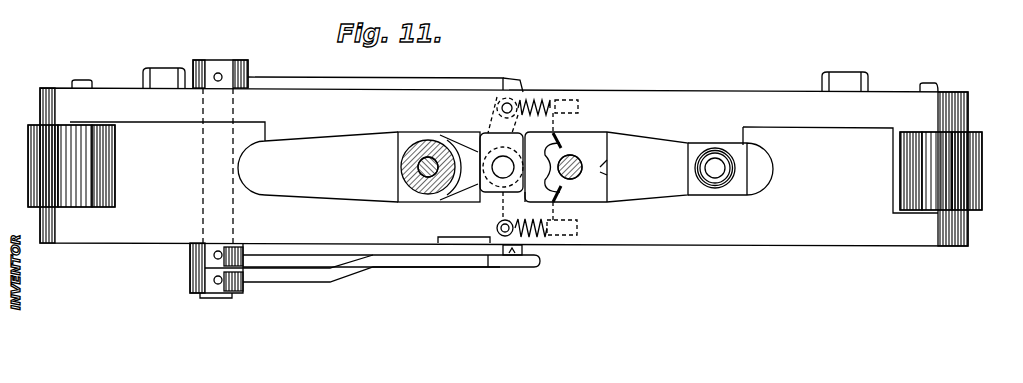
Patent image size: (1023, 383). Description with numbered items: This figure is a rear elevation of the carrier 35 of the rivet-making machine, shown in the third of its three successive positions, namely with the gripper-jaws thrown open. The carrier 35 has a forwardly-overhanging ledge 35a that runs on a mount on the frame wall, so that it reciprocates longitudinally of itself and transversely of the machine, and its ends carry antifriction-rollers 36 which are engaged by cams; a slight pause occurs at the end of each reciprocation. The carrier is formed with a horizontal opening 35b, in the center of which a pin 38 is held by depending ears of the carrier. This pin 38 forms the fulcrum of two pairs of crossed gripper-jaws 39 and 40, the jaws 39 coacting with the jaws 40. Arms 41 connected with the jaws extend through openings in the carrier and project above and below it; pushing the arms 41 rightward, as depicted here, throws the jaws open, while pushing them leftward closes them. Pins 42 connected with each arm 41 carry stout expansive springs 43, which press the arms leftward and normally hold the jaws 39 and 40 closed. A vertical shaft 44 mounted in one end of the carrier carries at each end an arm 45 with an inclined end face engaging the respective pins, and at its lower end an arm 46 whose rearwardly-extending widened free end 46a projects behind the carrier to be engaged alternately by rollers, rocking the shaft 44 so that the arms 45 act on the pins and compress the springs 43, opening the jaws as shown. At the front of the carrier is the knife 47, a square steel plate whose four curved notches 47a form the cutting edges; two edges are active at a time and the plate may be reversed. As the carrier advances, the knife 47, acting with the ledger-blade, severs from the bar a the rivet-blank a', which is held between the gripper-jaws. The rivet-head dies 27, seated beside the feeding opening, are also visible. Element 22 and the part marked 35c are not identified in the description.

The lever 22 is at (402, 176).
The rivet-head die 27 is at (697, 184).
The carrier 35 is at (504, 183).
The forwardly-overhanging ledge 35a is at (657, 128).
The horizontal opening 35b is at (565, 198).
The plate on slide 35c is at (474, 245).
The antifriction-roller 36 is at (43, 140).
The pin 38 is at (498, 185).
The gripper-jaw 39 is at (550, 138).
The gripper-jaw 40 is at (468, 142).
The arm 41 is at (510, 96).
The pin 42 is at (578, 103).
The expansive spring 43 is at (540, 103).
The vertical shaft 44 is at (222, 60).
The arm 45 is at (320, 82).
The arm 46 is at (442, 262).
The widened free end 46a is at (522, 258).
The knife 47 is at (537, 163).
The curved notch 47a is at (582, 166).
The bar a is at (610, 171).
The rivet-blank a' is at (411, 167).